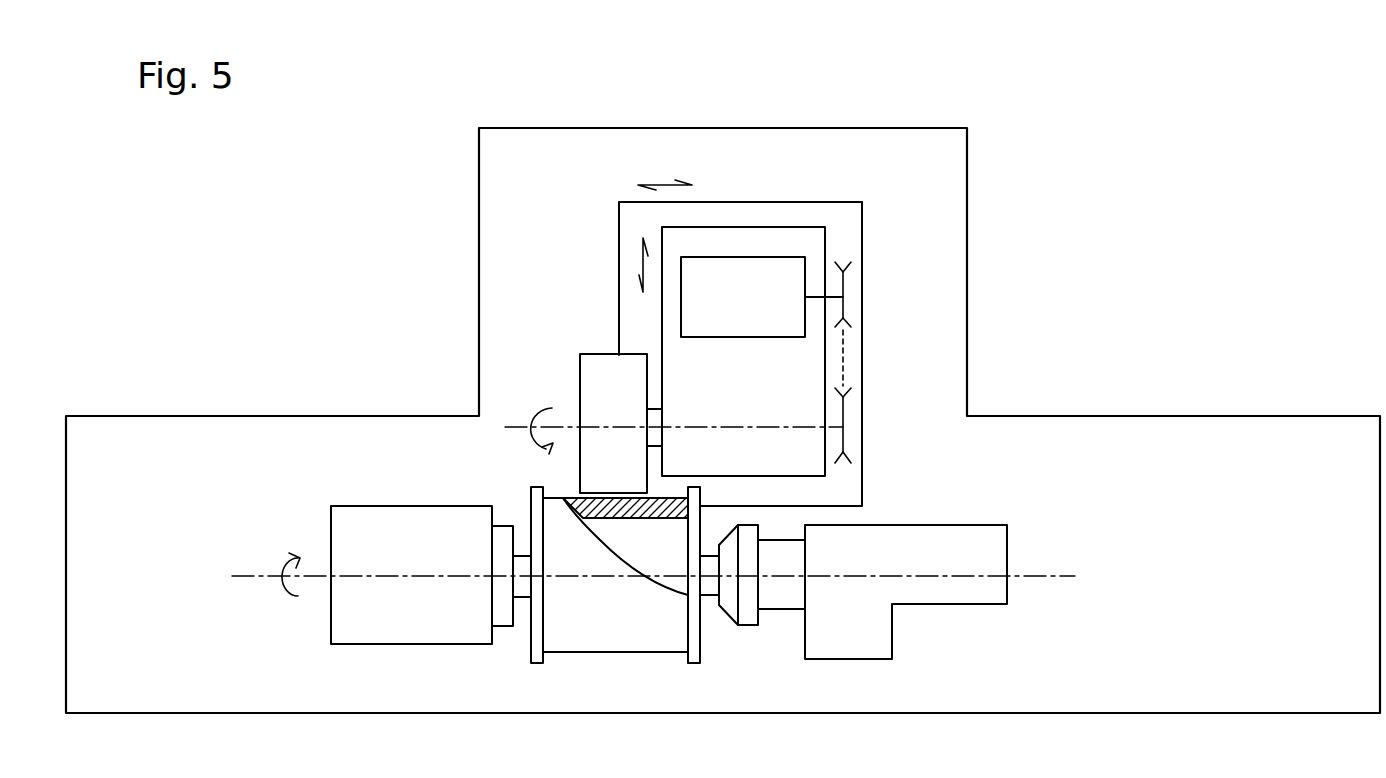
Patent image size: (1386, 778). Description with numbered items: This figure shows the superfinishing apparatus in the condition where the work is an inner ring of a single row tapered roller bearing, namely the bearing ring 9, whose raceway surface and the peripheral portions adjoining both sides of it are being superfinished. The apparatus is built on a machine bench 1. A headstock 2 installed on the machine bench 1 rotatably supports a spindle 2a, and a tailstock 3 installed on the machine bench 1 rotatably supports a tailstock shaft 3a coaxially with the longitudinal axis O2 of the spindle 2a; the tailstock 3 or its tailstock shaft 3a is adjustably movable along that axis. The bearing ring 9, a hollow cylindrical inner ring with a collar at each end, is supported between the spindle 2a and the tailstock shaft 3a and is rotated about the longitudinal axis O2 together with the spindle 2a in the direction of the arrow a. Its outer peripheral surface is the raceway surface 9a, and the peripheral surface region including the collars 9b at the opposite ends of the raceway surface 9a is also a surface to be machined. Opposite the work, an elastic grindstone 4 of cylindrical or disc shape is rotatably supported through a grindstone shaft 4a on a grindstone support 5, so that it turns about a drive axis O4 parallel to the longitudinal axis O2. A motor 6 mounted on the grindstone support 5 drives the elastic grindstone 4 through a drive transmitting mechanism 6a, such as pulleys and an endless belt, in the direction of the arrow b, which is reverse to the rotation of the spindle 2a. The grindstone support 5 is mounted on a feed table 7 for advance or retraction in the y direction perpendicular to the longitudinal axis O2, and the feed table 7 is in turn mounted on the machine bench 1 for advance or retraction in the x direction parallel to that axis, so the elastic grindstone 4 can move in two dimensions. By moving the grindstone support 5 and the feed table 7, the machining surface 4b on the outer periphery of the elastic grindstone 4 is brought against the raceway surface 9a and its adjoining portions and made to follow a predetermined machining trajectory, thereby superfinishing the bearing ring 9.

The machine bench 1 is at (1190, 423).
The headstock 2 is at (378, 645).
The spindle 2a is at (510, 625).
The tailstock 3 is at (958, 595).
The tailstock shaft 3a is at (790, 595).
The elastic grindstone 4 is at (592, 377).
The grindstone shaft 4a is at (655, 410).
The machining surface 4b is at (563, 498).
The grindstone support 5 is at (811, 237).
The motor 6 is at (750, 272).
The drive transmitting mechanism 6a is at (860, 351).
The feed table 7 is at (848, 230).
The bearing ring 9 is at (603, 632).
The raceway surface 9a is at (638, 652).
The collars 9b is at (537, 665).
The longitudinal axis of the spindle O2 is at (240, 577).
The drive axis O4 is at (510, 427).
The arrow a is at (298, 580).
The arrow b is at (551, 435).
The x-axis direction x is at (667, 185).
The y-axis direction y is at (643, 264).